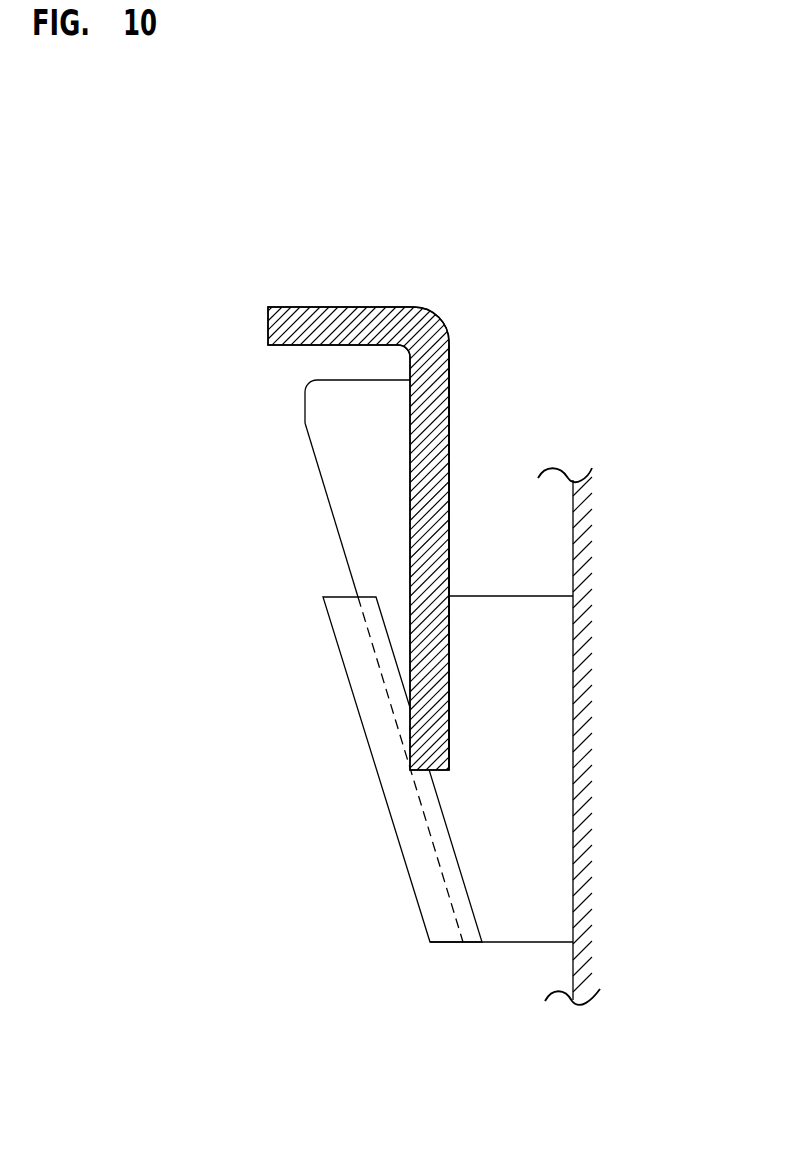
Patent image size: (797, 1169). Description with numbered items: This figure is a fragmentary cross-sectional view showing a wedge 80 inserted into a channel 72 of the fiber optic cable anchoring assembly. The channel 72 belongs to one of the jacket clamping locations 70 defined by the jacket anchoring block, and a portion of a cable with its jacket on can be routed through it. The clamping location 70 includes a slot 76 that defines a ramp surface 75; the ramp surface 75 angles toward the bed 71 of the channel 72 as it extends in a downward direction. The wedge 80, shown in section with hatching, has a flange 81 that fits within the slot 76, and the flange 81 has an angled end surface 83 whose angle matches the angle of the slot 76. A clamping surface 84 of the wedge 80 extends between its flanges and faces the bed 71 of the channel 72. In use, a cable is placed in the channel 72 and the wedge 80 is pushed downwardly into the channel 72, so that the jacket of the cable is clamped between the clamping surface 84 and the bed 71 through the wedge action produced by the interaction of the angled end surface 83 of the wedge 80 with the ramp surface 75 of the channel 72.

The jacket clamping location 70 is at (571, 707).
The bed 71 is at (573, 895).
The channel 72 is at (513, 913).
The ramp surface 75 is at (438, 860).
The slot 76 is at (453, 877).
The wedge 80 is at (481, 339).
The flange 81 is at (332, 437).
The angled end surface 83 is at (327, 498).
The clamping surface 84 is at (449, 470).